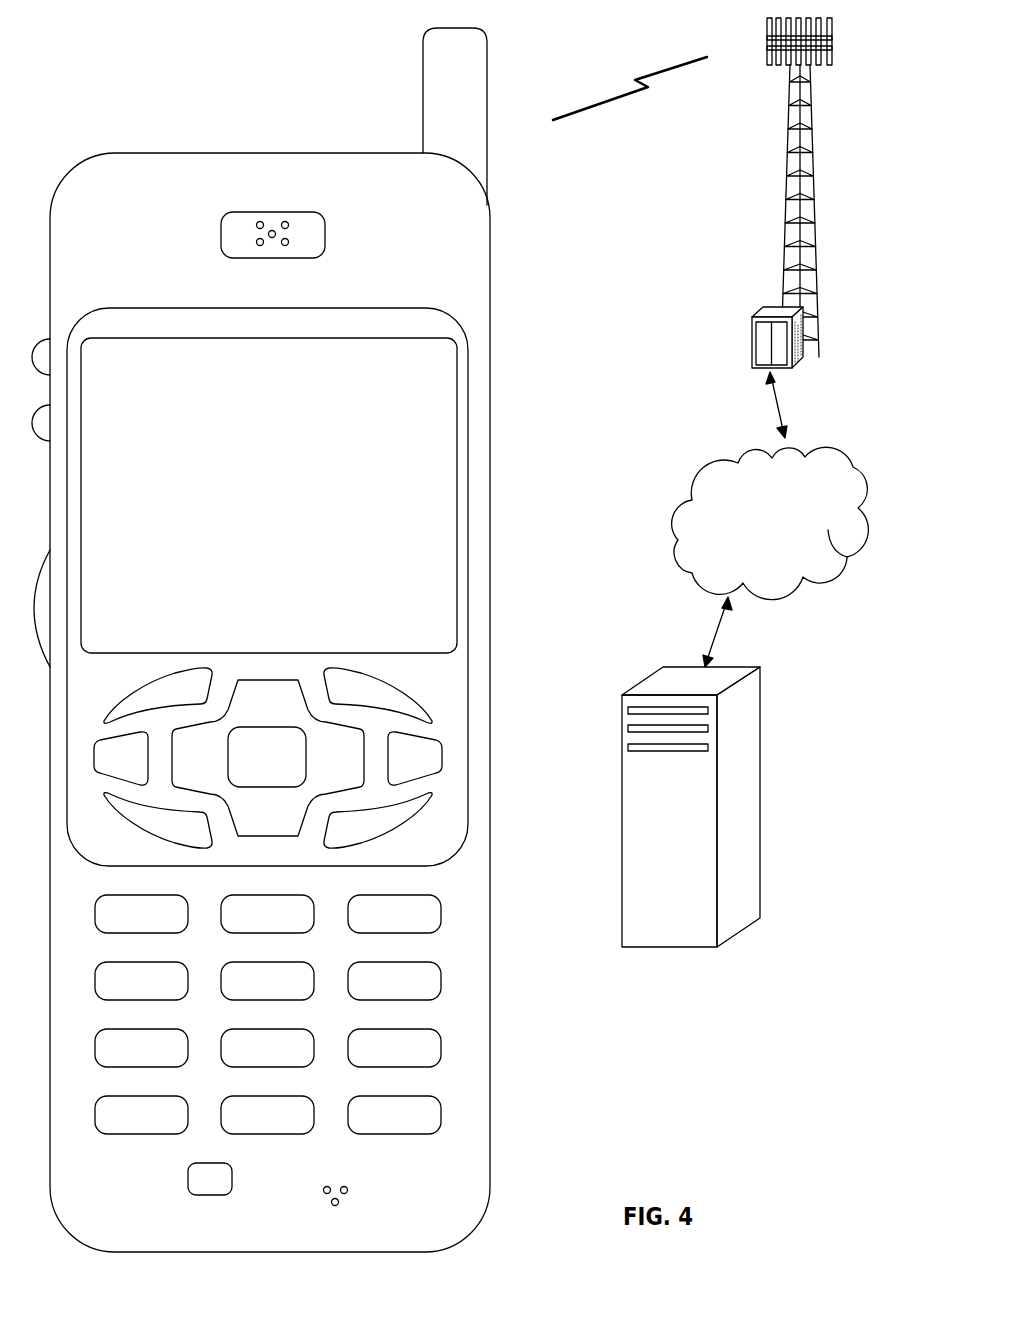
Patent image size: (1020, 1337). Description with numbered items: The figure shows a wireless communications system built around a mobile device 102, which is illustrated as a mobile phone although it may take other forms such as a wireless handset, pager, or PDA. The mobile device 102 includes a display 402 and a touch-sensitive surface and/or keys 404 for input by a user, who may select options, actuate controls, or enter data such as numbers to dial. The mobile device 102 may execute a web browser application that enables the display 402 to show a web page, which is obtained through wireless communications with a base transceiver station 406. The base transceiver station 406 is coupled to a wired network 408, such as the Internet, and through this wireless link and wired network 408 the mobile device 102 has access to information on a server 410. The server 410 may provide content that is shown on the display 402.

The mobile device 102 is at (106, 1252).
The display 402 is at (466, 351).
The keys 404 is at (502, 1150).
The base transceiver station 406 is at (785, 208).
The wired network 408 is at (688, 573).
The server 410 is at (668, 947).